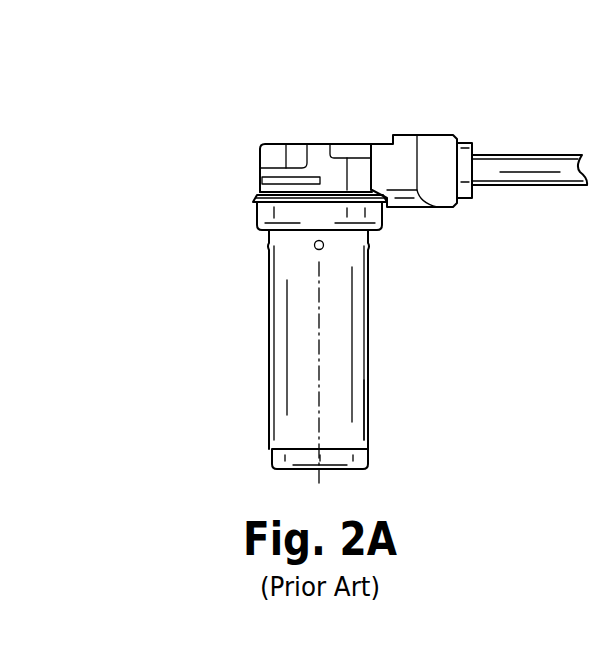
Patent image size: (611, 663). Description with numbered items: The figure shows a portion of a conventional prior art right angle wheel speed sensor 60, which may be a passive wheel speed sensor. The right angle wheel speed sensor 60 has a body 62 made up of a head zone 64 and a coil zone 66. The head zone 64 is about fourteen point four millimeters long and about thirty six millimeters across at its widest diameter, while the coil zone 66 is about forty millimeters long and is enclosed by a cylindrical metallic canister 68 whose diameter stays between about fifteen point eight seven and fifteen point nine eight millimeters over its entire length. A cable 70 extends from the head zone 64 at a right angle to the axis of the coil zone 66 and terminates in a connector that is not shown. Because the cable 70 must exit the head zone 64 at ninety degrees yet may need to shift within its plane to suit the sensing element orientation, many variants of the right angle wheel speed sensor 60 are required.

The right angle wheel speed sensor 60 is at (472, 302).
The body 62 is at (328, 143).
The head zone 64 is at (232, 193).
The coil zone 66 is at (237, 348).
The cylindrical metallic canister 68 is at (358, 408).
The cable 70 is at (508, 153).